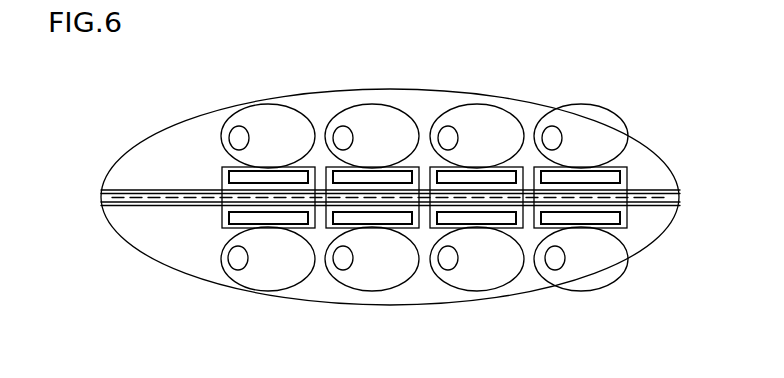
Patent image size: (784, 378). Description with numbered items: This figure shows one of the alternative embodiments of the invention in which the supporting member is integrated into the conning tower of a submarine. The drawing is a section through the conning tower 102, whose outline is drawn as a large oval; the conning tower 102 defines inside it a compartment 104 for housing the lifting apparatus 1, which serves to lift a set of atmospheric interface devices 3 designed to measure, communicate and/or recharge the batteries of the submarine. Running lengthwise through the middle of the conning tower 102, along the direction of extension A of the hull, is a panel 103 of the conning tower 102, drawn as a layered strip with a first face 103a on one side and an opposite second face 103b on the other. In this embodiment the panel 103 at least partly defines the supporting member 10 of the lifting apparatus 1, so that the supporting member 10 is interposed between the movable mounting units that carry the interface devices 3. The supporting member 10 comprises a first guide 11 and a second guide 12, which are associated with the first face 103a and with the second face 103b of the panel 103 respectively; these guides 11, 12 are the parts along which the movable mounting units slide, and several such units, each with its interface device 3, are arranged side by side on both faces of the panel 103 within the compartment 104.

The lifting apparatus 1 is at (297, 106).
The atmospheric interface devices 3 is at (239, 126).
The supporting member 10 is at (217, 177).
The first guide 11 is at (312, 215).
The second guide 12 is at (222, 167).
The conning tower 102 is at (460, 88).
The panel 103 is at (126, 212).
The first face 103a is at (672, 205).
The second face 103b is at (672, 190).
The compartment 104 is at (183, 142).
The direction of extension A is at (88, 172).